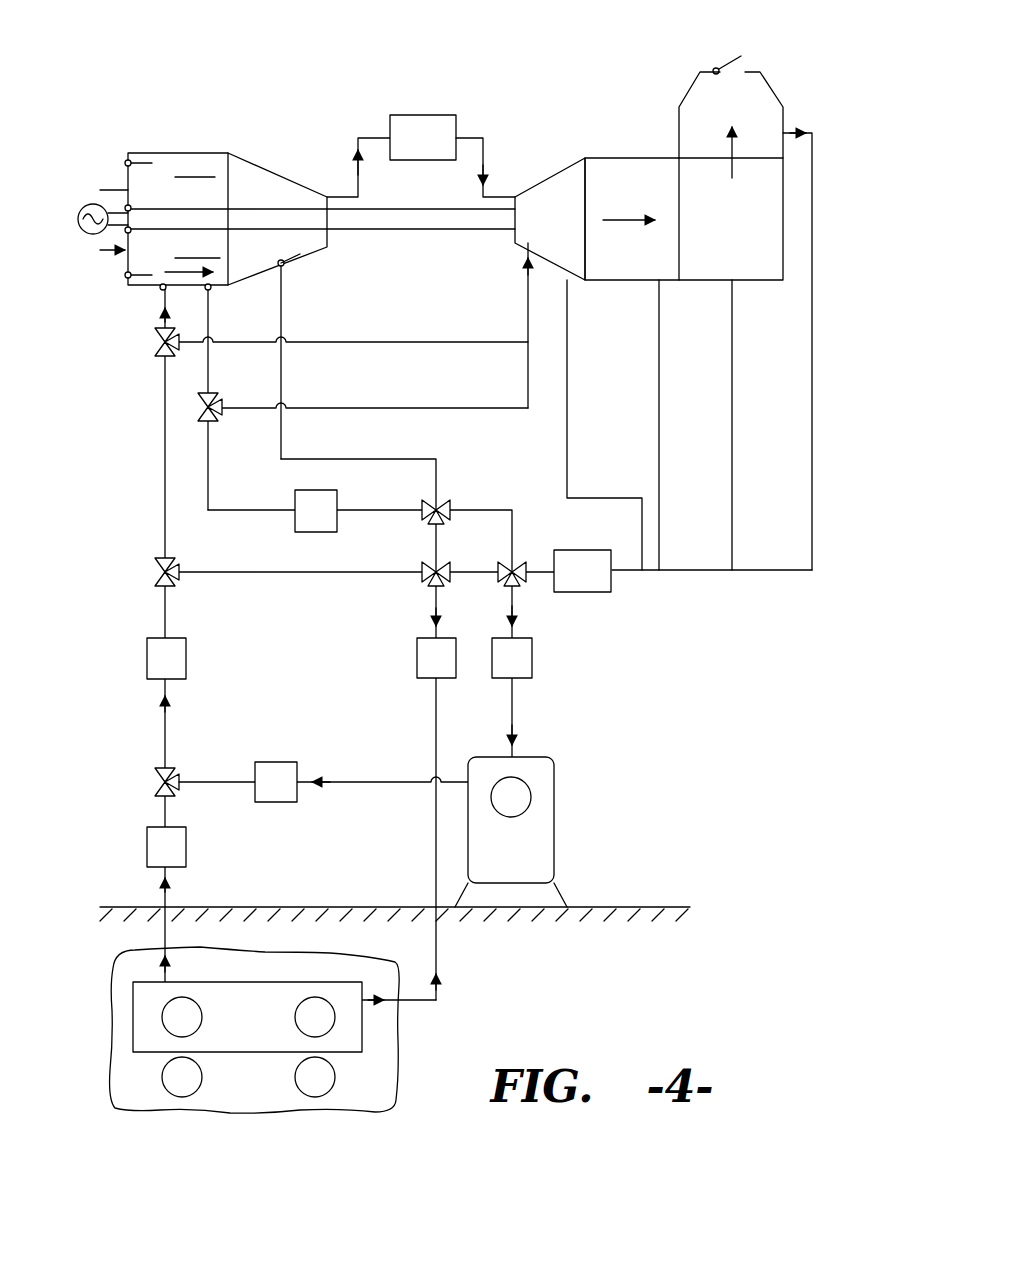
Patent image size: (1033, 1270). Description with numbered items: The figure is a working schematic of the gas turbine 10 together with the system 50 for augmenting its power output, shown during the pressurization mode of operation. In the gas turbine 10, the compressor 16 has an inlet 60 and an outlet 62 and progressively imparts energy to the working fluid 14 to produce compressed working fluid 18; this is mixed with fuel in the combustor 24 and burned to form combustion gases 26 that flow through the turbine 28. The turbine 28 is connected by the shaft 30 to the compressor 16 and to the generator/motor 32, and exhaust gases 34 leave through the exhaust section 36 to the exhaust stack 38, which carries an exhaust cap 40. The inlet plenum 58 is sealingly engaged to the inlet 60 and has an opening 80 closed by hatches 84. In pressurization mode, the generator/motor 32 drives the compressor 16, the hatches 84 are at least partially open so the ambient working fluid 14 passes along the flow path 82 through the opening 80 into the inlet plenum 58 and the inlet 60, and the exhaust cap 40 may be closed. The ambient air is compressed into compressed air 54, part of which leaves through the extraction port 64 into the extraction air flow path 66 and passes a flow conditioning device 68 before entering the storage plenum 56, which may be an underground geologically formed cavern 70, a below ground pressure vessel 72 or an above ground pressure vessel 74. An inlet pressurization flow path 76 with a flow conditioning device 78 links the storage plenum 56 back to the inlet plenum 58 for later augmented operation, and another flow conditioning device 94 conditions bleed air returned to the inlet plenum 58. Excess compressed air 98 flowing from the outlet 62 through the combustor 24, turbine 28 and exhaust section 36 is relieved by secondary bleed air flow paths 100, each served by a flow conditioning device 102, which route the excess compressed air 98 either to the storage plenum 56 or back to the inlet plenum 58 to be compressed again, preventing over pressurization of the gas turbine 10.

The gas turbine 10 is at (603, 63).
The working fluid 14 is at (212, 177).
The compressor 16 is at (243, 198).
The compressed working fluid 18 is at (356, 160).
The combustor 24 is at (412, 148).
The combustion gases 26 is at (487, 164).
The turbine 28 is at (538, 222).
The shaft 30 is at (400, 208).
The generator/motor 32 is at (90, 206).
The exhaust gases 34 is at (614, 220).
The exhaust section 36 is at (722, 232).
The exhaust stack 38 is at (778, 118).
The exhaust cap 40 is at (722, 62).
The system 50 is at (118, 533).
The compressed air 54 is at (455, 326).
The storage plenum 56 is at (500, 857).
The inlet plenum 58 is at (212, 148).
The inlet 60 is at (230, 156).
The outlet 62 is at (345, 245).
The extraction port 64 is at (300, 266).
The extraction air flow path 66 is at (290, 286).
The flow conditioning device 68 is at (425, 669).
The underground geologically formed cavern 70 is at (115, 1088).
The below ground pressure vessel 72 is at (118, 1000).
The above ground pressure vessel 74 is at (556, 840).
The inlet pressurization flow path 76 is at (152, 396).
The flow conditioning device 78 is at (155, 670).
The opening 80 is at (126, 186).
The flow path 82 is at (118, 187).
The hatches 84 is at (143, 163).
The flow conditioning device 94 is at (305, 522).
The excess compressed air 98 is at (178, 290).
The secondary bleed air flow paths 100 is at (570, 390).
The flow conditioning device 102 is at (566, 582).